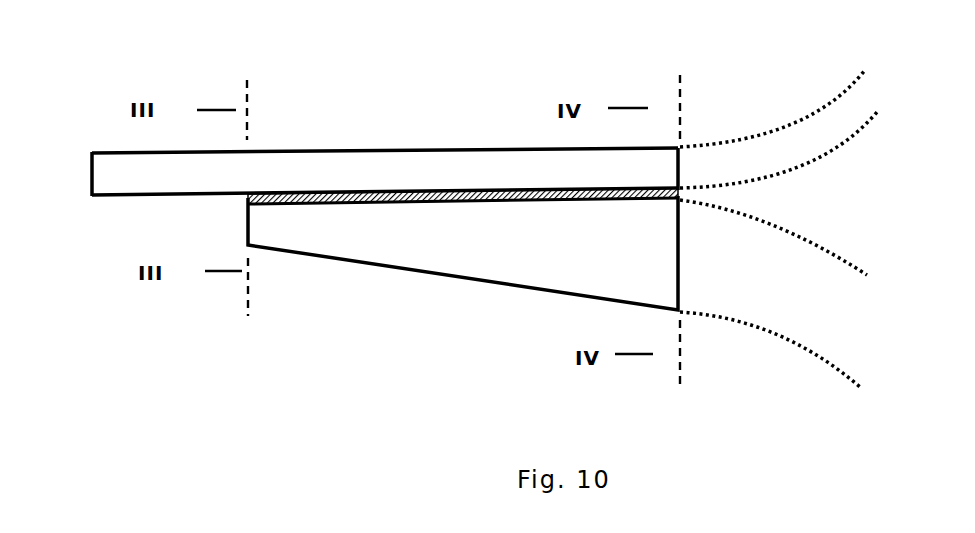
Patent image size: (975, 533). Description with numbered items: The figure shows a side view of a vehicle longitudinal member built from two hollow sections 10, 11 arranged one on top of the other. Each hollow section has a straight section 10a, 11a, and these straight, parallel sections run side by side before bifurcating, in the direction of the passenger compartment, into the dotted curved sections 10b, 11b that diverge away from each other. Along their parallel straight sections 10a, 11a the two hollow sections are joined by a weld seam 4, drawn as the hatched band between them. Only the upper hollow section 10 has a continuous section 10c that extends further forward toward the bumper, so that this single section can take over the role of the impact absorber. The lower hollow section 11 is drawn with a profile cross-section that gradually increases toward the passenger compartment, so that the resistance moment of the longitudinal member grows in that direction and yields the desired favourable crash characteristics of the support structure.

The hollow section 10 is at (423, 147).
The straight section 10a is at (348, 173).
The curved section 10b is at (808, 125).
The continuous section 10c is at (103, 163).
The weld seam 4 is at (247, 198).
The hollow section 11 is at (415, 270).
The straight section 11a is at (387, 232).
The curved section 11b is at (787, 315).